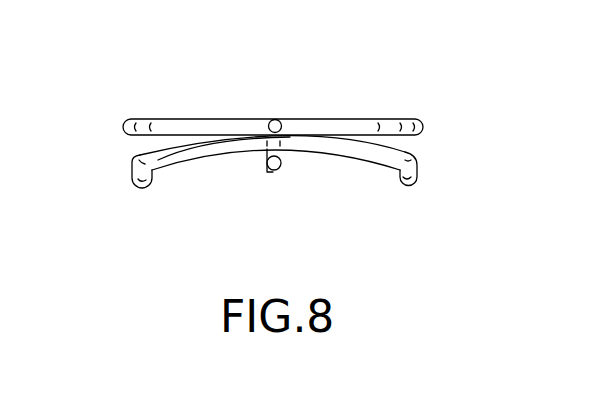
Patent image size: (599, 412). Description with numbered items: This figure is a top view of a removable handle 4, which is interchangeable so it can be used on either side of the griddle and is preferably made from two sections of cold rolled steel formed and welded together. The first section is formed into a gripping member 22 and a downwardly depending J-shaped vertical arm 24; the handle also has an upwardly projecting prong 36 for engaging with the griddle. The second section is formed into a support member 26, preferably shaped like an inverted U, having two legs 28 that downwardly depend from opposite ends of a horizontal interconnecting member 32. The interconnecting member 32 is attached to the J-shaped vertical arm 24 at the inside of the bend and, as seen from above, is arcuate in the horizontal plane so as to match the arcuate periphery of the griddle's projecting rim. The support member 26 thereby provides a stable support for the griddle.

The removable handle 4 is at (337, 100).
The gripping member 22 is at (188, 118).
The J-shaped vertical arm 24 is at (278, 117).
The support member 26 is at (117, 185).
The legs 28 is at (142, 184).
The interconnecting member 32 is at (297, 145).
The upwardly projecting prong 36 is at (270, 171).